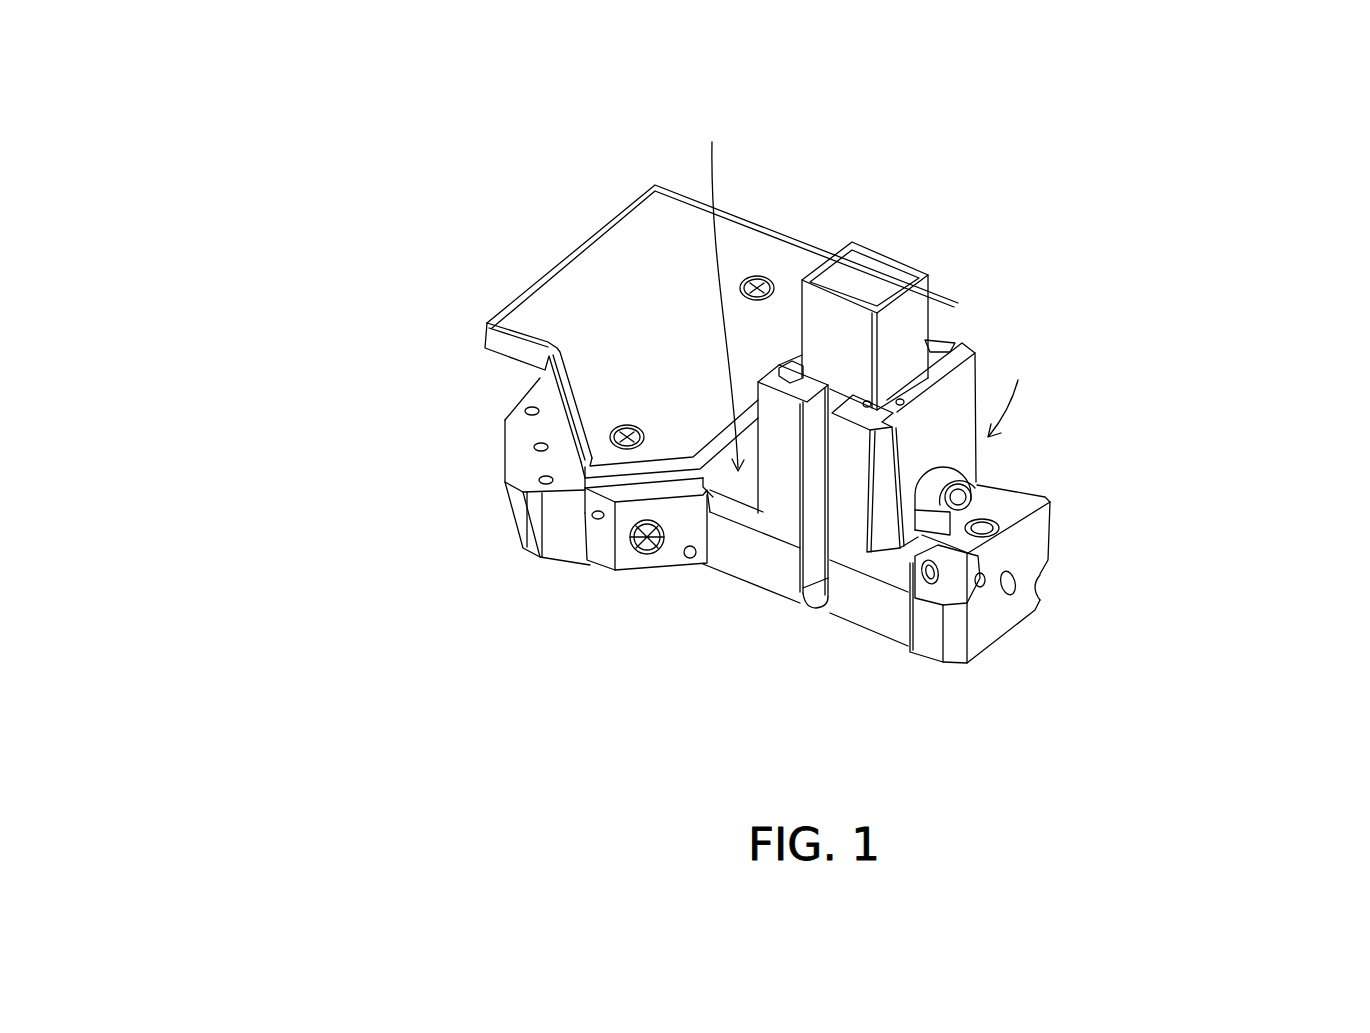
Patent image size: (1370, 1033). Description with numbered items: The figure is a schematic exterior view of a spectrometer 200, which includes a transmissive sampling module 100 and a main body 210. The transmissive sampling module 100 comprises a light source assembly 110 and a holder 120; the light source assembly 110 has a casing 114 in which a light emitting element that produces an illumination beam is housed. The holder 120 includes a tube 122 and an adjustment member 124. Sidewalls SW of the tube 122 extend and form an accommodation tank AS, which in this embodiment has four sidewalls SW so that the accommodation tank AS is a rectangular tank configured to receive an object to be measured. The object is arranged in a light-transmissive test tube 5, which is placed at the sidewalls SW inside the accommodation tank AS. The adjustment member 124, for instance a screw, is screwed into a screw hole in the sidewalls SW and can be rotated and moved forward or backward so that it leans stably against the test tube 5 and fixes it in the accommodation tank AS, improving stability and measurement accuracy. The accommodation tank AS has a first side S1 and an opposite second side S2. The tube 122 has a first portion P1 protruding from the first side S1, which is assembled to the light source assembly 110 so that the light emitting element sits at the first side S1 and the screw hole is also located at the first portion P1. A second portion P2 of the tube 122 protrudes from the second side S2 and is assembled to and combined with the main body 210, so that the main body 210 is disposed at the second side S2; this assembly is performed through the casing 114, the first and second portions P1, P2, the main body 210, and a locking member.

The transmissive sampling module 100 is at (1101, 277).
The light source assembly 110 is at (1060, 628).
The casing 114 is at (992, 620).
The holder 120 is at (243, 35).
The tube 122 is at (243, 135).
The adjustment member 124 is at (970, 493).
The spectrometer 200 is at (1320, 774).
The main body 210 is at (588, 280).
The test tube 5 is at (880, 254).
The accommodation tank AS is at (930, 347).
The sidewalls SW is at (962, 343).
The first side S1 is at (1011, 391).
The second side S2 is at (722, 288).
The first portion P1 is at (877, 615).
The second portion P2 is at (760, 566).